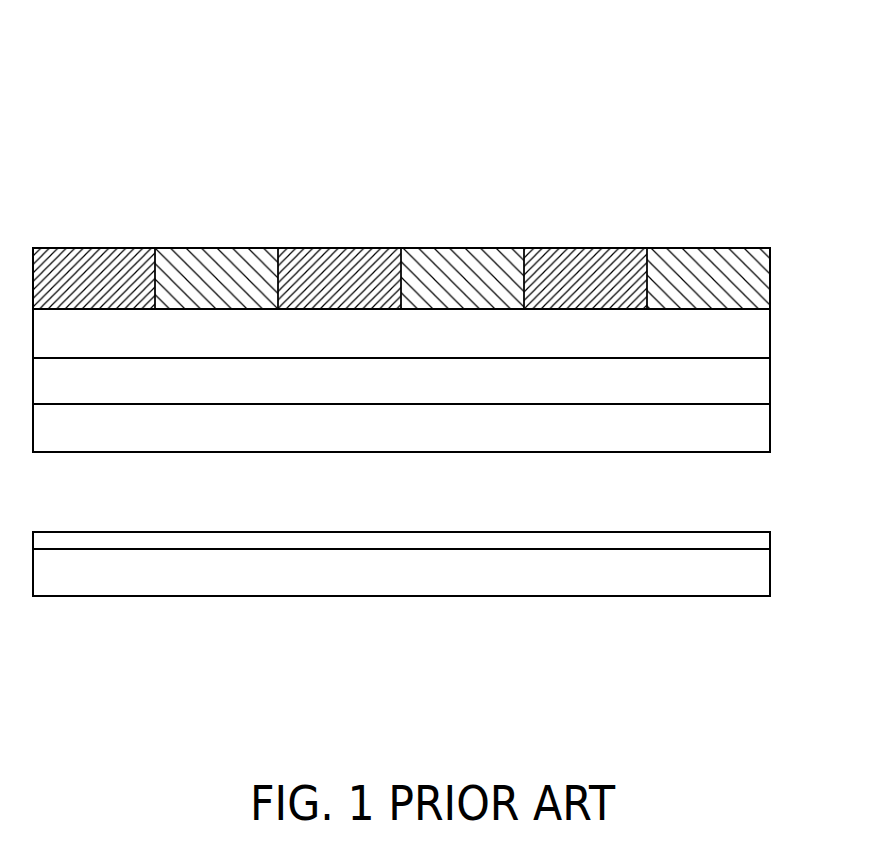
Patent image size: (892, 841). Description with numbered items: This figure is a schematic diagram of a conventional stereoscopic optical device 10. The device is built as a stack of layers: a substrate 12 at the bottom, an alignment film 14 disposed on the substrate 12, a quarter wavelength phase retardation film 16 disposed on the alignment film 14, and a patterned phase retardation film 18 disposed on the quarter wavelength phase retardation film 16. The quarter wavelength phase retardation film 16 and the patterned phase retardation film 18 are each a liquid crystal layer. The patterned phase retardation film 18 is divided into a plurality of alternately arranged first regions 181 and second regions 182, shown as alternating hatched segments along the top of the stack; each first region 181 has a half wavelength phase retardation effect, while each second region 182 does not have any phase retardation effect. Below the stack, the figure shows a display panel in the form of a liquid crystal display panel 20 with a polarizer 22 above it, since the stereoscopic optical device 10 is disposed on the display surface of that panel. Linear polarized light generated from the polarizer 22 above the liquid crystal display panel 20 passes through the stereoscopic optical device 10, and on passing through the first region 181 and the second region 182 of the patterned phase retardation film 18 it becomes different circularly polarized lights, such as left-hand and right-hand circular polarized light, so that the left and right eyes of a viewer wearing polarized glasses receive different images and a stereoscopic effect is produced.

The stereoscopic optical device 10 is at (440, 311).
The substrate 12 is at (386, 443).
The alignment film 14 is at (386, 395).
The quarter wavelength phase retardation film 16 is at (386, 348).
The patterned phase retardation film 18 is at (771, 277).
The first region 181 is at (70, 292).
The second region 182 is at (237, 292).
The liquid crystal display panel 20 is at (386, 587).
The polarizer 22 is at (748, 535).